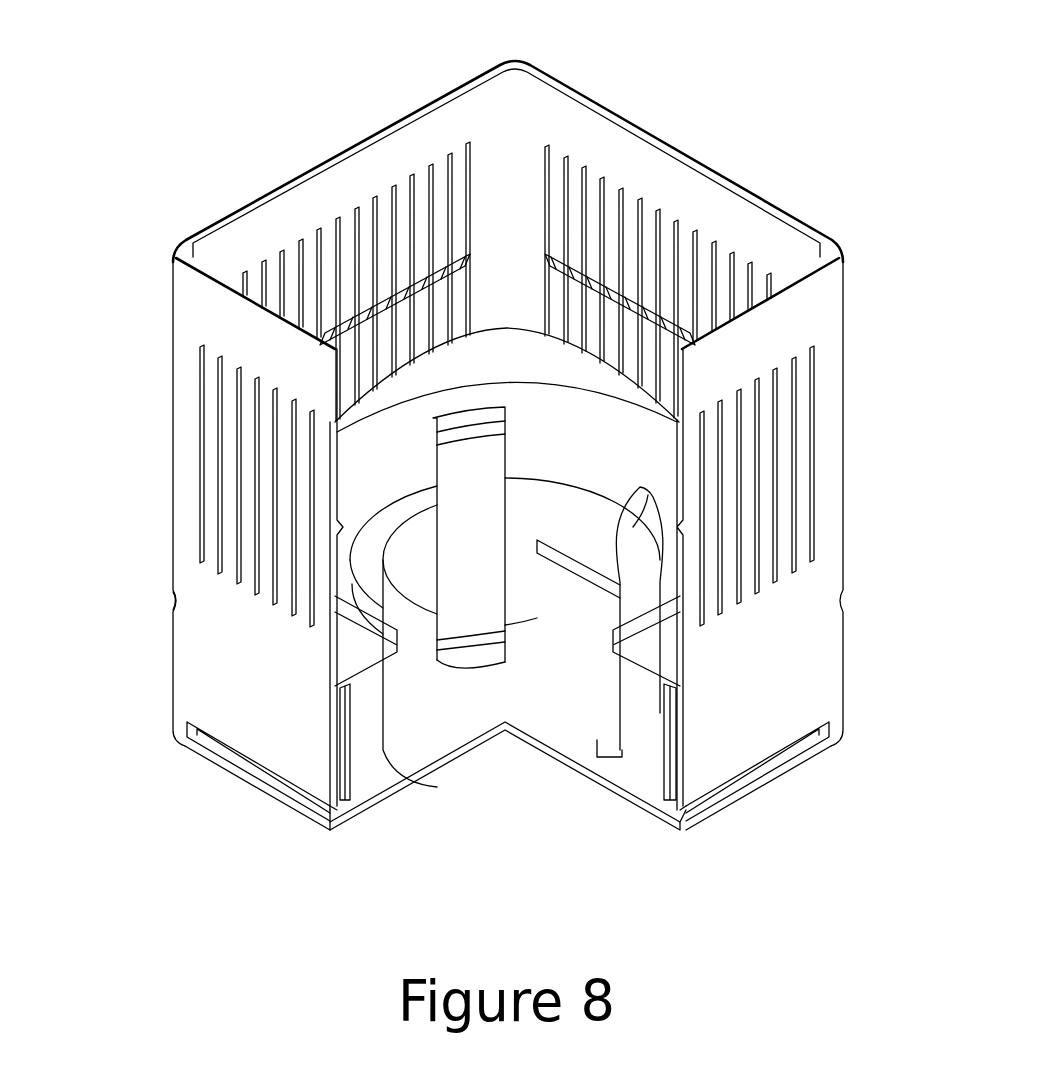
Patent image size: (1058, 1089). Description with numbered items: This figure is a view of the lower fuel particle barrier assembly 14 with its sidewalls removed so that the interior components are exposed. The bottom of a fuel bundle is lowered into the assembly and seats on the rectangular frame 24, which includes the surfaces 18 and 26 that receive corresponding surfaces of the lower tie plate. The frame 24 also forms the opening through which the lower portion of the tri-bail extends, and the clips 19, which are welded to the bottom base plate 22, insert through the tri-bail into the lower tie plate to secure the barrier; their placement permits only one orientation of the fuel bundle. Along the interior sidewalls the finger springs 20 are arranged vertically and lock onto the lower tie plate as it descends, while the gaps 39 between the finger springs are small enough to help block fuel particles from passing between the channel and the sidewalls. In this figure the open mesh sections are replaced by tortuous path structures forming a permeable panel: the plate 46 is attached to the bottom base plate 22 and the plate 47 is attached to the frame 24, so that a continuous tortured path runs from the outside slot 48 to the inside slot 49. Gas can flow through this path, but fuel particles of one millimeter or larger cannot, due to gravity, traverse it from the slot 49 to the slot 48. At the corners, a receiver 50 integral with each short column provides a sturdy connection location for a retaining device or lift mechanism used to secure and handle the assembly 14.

The lower fuel particle barrier assembly 14 is at (308, 68).
The surface 18 is at (591, 440).
The clips 19 is at (461, 408).
The finger springs 20 is at (466, 268).
The bottom base plate 22 is at (562, 698).
The rectangular frame 24 is at (364, 636).
The surface 26 is at (536, 358).
The gaps 39 is at (336, 220).
The plate 46 is at (338, 812).
The plate 47 is at (352, 778).
The outside slot 48 is at (737, 784).
The inside slot 49 is at (662, 801).
The receiver 50 is at (176, 600).